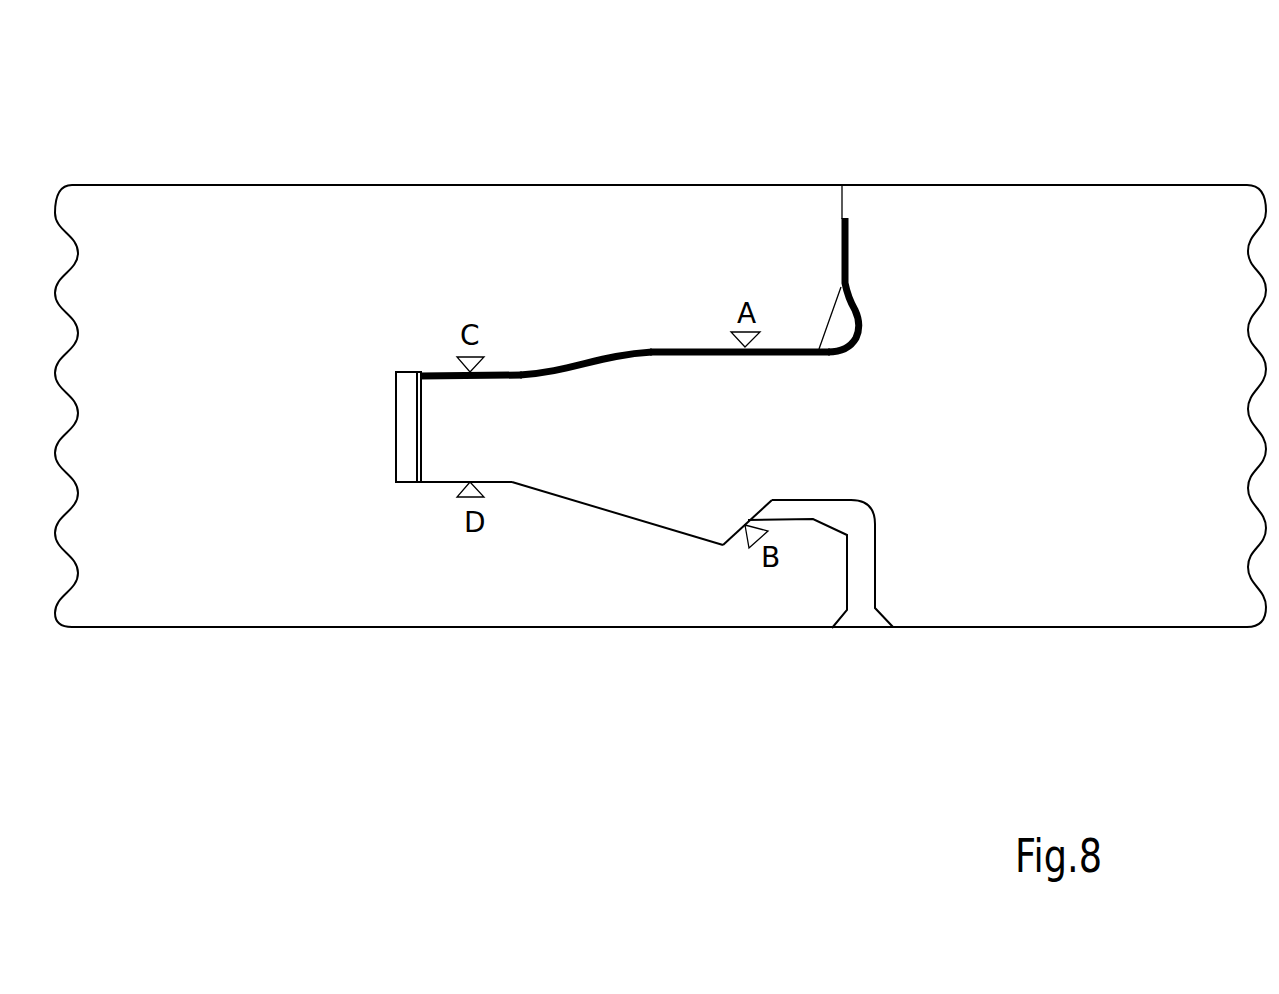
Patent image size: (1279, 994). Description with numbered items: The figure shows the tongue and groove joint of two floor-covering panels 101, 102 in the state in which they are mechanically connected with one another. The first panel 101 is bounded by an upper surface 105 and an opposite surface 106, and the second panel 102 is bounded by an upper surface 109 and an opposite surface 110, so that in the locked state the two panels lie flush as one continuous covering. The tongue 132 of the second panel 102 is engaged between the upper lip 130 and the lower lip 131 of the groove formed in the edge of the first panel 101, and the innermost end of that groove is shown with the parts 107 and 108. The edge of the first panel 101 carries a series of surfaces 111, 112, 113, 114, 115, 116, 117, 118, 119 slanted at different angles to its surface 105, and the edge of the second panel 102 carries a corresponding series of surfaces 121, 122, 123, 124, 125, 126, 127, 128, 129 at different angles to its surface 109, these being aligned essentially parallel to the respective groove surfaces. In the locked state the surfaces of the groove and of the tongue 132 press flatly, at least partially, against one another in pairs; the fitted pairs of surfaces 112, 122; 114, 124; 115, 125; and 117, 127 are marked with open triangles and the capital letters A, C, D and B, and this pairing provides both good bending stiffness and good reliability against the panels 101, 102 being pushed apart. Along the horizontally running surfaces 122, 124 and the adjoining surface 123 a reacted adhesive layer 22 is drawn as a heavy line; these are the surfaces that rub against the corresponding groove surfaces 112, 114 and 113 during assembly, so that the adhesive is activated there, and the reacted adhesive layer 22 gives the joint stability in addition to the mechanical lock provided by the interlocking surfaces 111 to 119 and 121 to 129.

The reacted adhesive layer 22 is at (669, 205).
The first panel 101 is at (300, 235).
The second panel 102 is at (1037, 233).
The surface of first panel 105 is at (193, 185).
The lower edge of first section 106 is at (202, 628).
The end piece outer wall 107 is at (396, 405).
The end piece inner wall 108 is at (418, 435).
The surface of second panel 109 is at (1142, 184).
The lower edge of second section 110 is at (1143, 627).
The edge surface of groove profile 111 is at (903, 209).
The edge surface of groove profile 112 is at (744, 218).
The edge surface of groove profile 113 is at (586, 229).
The edge surface of groove profile 114 is at (437, 230).
The edge surface of groove profile 115 is at (443, 602).
The edge surface of groove profile 116 is at (617, 602).
The edge surface of groove profile 117 is at (752, 611).
The edge surface of groove profile 118 is at (794, 521).
The edge surface of groove profile 119 is at (852, 595).
The edge surface of tongue profile 121 is at (842, 186).
The edge surface of tongue profile 122 is at (790, 345).
The edge surface of tongue profile 123 is at (597, 358).
The edge surface of tongue profile 124 is at (437, 372).
The edge surface of tongue profile 125 is at (436, 484).
The edge surface of tongue profile 126 is at (607, 512).
The edge surface of tongue profile 127 is at (731, 552).
The edge surface of tongue profile 128 is at (802, 500).
The edge surface of tongue profile 129 is at (877, 565).
The upper lip 130 is at (742, 263).
The lower lip 131 is at (685, 595).
The tongue 132 is at (702, 442).